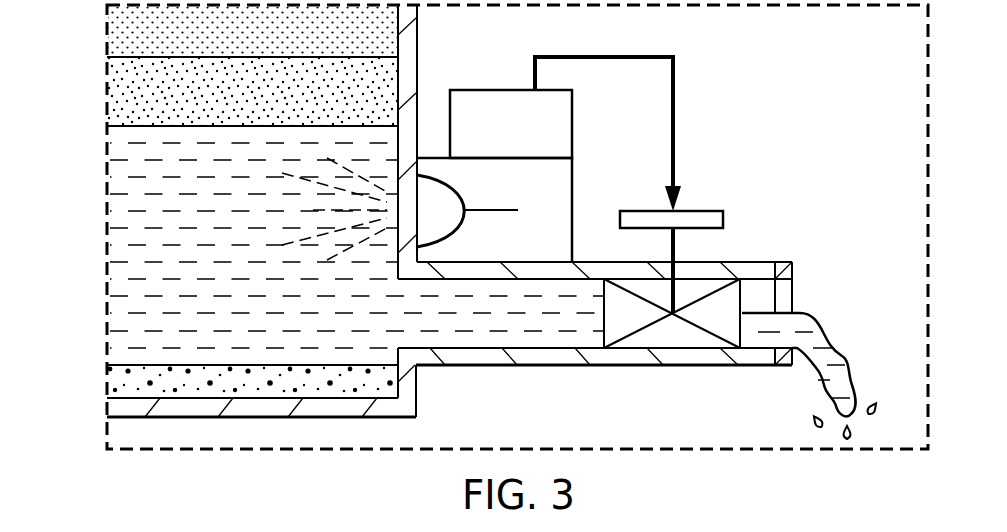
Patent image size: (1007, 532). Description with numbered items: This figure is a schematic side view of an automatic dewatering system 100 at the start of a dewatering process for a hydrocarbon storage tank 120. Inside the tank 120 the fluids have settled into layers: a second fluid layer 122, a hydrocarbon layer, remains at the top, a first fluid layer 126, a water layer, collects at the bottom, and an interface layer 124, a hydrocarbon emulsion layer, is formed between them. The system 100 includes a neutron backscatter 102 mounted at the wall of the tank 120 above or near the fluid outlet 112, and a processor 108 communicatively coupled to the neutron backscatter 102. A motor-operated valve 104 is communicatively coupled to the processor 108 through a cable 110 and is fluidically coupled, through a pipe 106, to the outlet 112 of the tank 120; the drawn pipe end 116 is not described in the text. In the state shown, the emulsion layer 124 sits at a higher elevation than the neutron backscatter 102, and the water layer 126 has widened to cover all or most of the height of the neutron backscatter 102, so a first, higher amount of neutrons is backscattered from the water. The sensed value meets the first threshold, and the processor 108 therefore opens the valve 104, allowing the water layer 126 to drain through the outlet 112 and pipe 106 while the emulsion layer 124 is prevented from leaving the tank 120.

The automatic dewatering system 100 is at (814, 81).
The neutron backscatter 102 is at (560, 178).
The motor-operated valve 104 is at (706, 211).
The pipe 106 is at (618, 357).
The processor 108 is at (562, 121).
The cable 110 is at (676, 123).
The fluid outlet 112 is at (488, 345).
The outlet 116 is at (795, 271).
The hydrocarbon storage tank 120 is at (426, 56).
The second fluid layer 122 is at (108, 40).
The interface layer 124 is at (108, 95).
The first fluid layer 126 is at (115, 284).